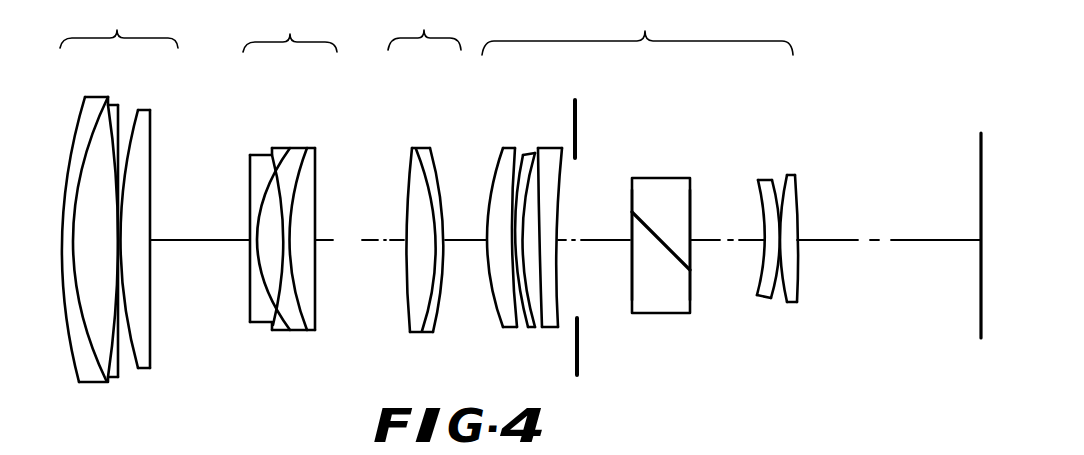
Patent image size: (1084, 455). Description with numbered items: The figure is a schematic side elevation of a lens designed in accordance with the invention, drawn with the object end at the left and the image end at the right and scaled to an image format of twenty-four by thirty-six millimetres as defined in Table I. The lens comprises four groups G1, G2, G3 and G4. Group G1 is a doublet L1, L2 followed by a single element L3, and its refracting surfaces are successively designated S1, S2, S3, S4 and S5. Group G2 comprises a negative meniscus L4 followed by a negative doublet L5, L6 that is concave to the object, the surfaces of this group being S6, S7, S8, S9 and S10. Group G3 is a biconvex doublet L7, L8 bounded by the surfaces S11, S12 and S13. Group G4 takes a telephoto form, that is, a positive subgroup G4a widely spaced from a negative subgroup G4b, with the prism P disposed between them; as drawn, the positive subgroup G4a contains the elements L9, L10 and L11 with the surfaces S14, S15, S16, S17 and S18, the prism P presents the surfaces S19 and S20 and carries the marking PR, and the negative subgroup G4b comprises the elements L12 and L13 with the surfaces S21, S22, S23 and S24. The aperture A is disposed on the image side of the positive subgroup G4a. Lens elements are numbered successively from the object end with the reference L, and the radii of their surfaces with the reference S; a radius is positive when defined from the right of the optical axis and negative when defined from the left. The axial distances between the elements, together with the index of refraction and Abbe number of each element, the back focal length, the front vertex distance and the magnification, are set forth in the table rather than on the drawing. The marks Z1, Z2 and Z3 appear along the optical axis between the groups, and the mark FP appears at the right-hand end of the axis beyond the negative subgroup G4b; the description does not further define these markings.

The first lens group G1 is at (131, 222).
The second lens group G2 is at (288, 193).
The third lens group G3 is at (433, 187).
The fourth lens group G4 is at (659, 190).
The positive subgroup G4a is at (546, 94).
The negative subgroup G4b is at (765, 120).
The lens element L1 is at (99, 250).
The lens element L2 is at (138, 247).
The single lens element L3 is at (162, 239).
The negative meniscus L4 is at (249, 235).
The lens element L5 is at (314, 249).
The lens element L6 is at (332, 242).
The lens element L7 is at (430, 243).
The lens element L8 is at (458, 240).
The lens element L9 is at (497, 227).
The lens element L10 is at (539, 247).
The lens element L11 is at (580, 232).
The lens element L12 is at (761, 238).
The lens element L13 is at (819, 218).
The lens surface S1 is at (84, 105).
The lens surface S2 is at (119, 105).
The lens surface S3 is at (118, 124).
The lens surface S4 is at (127, 167).
The lens surface S5 is at (151, 197).
The lens surface S6 is at (250, 176).
The lens surface S7 is at (263, 155).
The lens surface S8 is at (281, 162).
The lens surface S9 is at (300, 174).
The lens surface S10 is at (316, 189).
The lens surface S11 is at (411, 152).
The lens surface S12 is at (429, 176).
The lens surface S13 is at (443, 200).
The lens surface S14 is at (494, 156).
The lens surface S15 is at (503, 150).
The lens surface S16 is at (521, 168).
The lens surface S17 is at (545, 183).
The lens surface S18 is at (570, 154).
The surface S19 is at (632, 207).
The surface S20 is at (692, 206).
The lens surface S21 is at (758, 192).
The lens surface S22 is at (777, 178).
The lens surface S23 is at (784, 176).
The lens surface S24 is at (798, 190).
The first axial spacing Z1 is at (200, 231).
The second axial spacing Z2 is at (359, 233).
The third axial spacing Z3 is at (466, 232).
The aperture A is at (578, 118).
The prism P is at (657, 178).
The prism reflecting surface PR is at (655, 231).
The focal plane FP is at (980, 147).